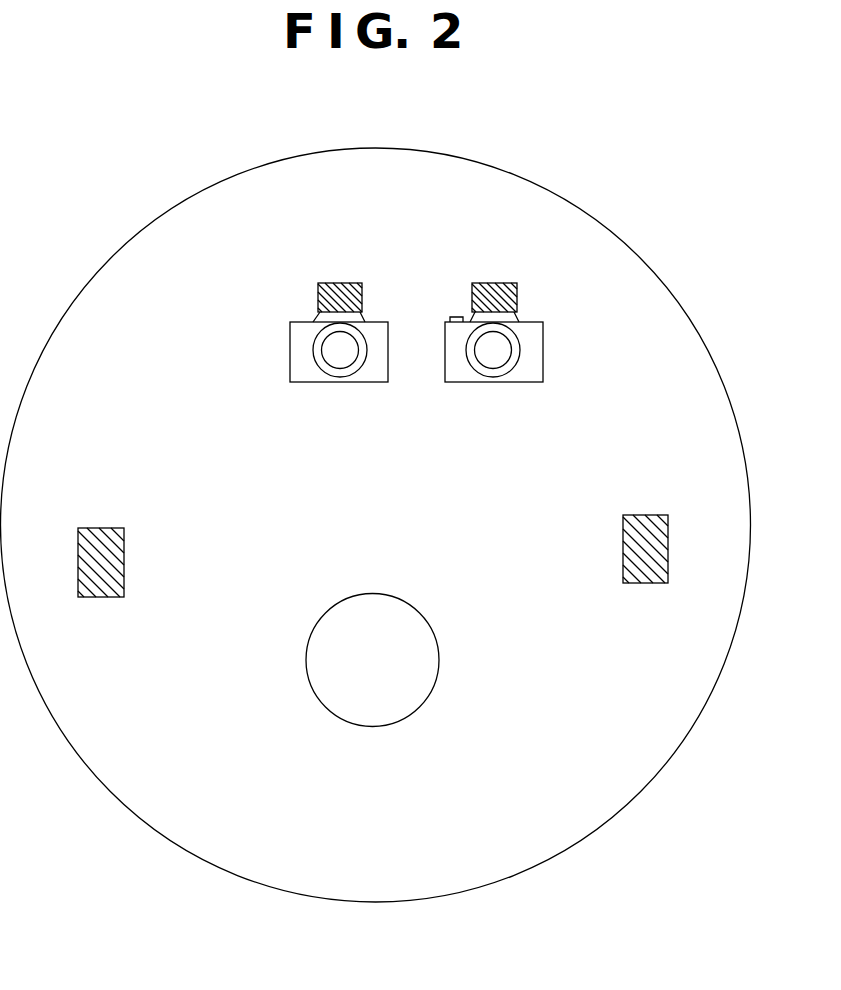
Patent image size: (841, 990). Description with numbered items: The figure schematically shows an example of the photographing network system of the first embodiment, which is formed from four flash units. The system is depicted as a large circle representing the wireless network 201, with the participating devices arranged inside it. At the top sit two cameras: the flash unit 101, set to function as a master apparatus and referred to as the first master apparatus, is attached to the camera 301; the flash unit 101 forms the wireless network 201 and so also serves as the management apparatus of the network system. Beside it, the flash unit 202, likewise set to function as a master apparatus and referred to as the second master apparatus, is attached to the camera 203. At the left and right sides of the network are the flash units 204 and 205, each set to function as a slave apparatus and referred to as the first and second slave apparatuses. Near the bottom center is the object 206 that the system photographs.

The wireless network 201 is at (502, 173).
The flash unit 101 is at (343, 283).
The camera 301 is at (360, 382).
The flash unit 202 is at (497, 283).
The camera 203 is at (513, 382).
The flash unit 204 is at (102, 597).
The flash unit 205 is at (647, 583).
The object 206 is at (416, 610).